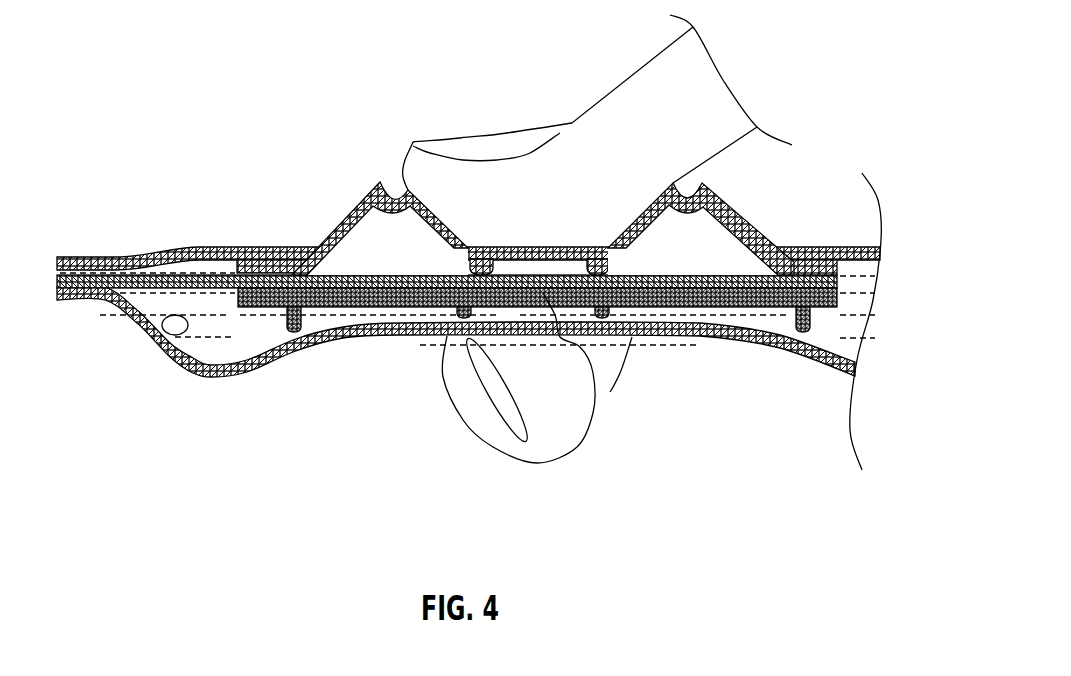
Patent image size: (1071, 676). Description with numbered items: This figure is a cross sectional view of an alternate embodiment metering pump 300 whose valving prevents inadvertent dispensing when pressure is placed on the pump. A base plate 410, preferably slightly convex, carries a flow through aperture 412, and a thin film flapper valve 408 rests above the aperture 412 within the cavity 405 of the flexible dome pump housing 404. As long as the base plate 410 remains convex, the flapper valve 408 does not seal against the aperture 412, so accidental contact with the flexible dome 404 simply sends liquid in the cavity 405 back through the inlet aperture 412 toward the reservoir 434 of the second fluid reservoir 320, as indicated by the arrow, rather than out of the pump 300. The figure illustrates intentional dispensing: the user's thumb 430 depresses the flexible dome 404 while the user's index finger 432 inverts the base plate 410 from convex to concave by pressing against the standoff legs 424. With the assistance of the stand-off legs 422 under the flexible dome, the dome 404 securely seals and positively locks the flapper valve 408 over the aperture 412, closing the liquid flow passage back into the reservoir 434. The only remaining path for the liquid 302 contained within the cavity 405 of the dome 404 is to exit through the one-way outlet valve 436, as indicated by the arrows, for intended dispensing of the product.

The metering pump 300 is at (365, 128).
The liquid 302 is at (372, 237).
The second fluid reservoir 320 is at (180, 368).
The flexible dome pump housing 404 is at (445, 210).
The cavity 405 is at (305, 245).
The flapper valve 408 is at (533, 282).
The base plate 410 is at (368, 305).
The flow through aperture 412 is at (513, 295).
The stand-off legs 422 is at (610, 260).
The standoff legs 424 is at (290, 333).
The thumb 430 is at (592, 167).
The index finger 432 is at (557, 433).
The reservoir 434 is at (170, 337).
The one-way outlet valve 436 is at (104, 258).